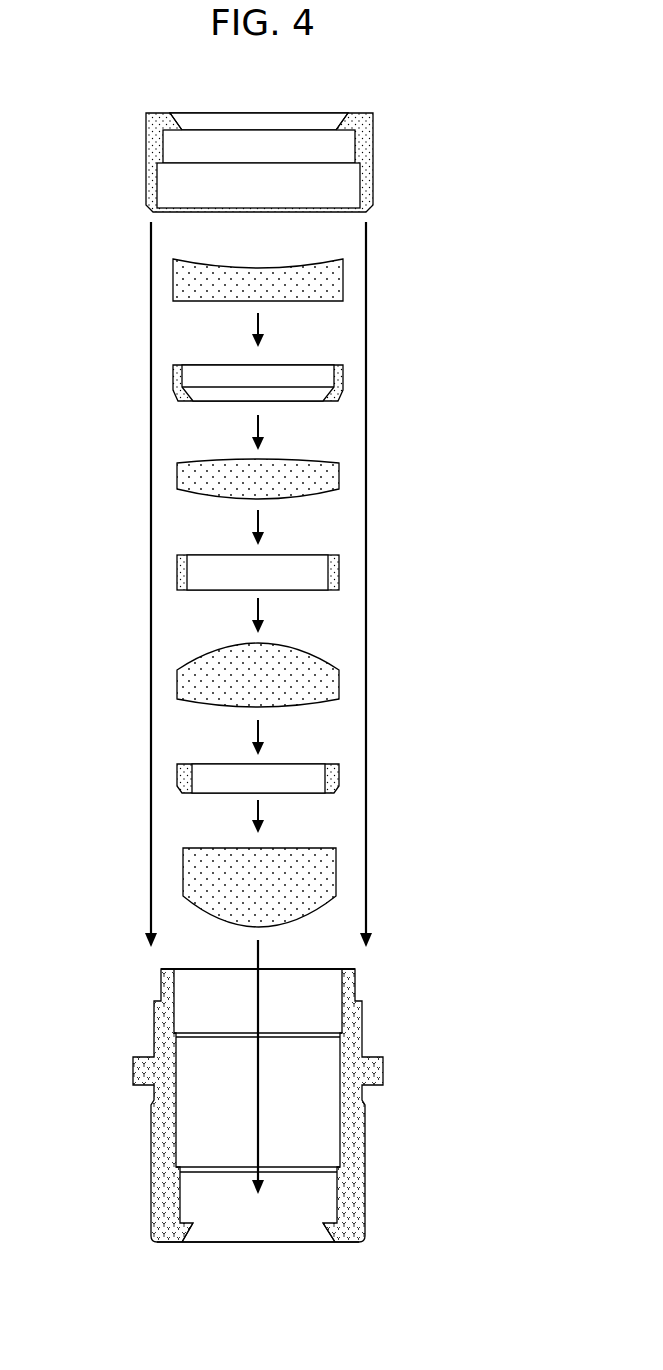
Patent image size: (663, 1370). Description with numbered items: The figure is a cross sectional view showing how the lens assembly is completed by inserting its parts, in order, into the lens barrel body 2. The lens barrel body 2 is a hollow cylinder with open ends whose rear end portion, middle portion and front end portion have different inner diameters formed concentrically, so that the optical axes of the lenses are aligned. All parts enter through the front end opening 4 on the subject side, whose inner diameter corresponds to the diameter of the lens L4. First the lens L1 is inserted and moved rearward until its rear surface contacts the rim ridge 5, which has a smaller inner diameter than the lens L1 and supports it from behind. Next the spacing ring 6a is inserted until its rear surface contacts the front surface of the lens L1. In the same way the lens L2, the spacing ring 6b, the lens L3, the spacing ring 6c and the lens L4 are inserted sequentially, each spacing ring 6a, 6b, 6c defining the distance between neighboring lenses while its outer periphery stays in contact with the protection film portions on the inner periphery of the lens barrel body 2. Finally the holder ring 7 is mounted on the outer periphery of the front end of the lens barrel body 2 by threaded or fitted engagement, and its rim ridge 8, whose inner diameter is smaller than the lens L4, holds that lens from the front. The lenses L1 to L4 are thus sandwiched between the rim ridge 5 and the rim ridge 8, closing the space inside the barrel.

The lens barrel body 2 is at (383, 1070).
The front end opening 4 is at (190, 968).
The rim ridge 5 is at (192, 1231).
The spacing ring 6a is at (338, 775).
The spacing ring 6b is at (338, 573).
The spacing ring 6c is at (342, 376).
The holder ring 7 is at (373, 157).
The rim ridge 8 is at (346, 113).
The lens L1 is at (337, 875).
The lens L2 is at (337, 685).
The lens L3 is at (340, 473).
The lens L4 is at (343, 274).